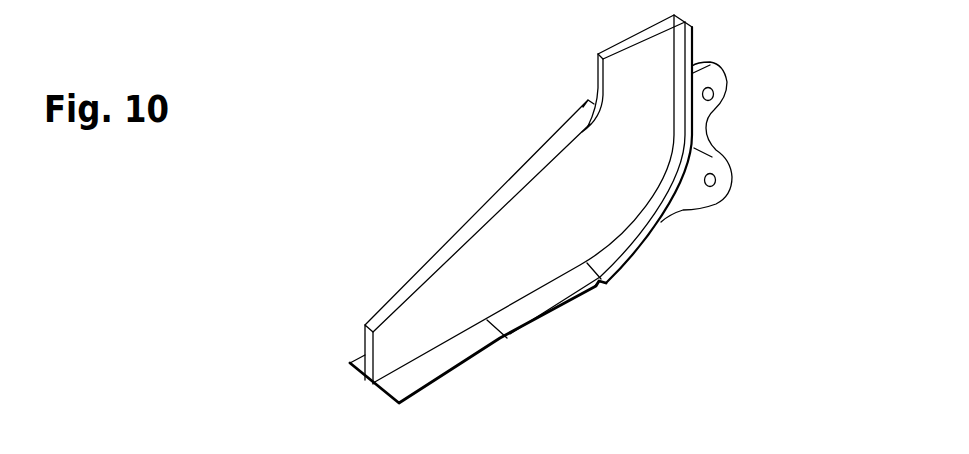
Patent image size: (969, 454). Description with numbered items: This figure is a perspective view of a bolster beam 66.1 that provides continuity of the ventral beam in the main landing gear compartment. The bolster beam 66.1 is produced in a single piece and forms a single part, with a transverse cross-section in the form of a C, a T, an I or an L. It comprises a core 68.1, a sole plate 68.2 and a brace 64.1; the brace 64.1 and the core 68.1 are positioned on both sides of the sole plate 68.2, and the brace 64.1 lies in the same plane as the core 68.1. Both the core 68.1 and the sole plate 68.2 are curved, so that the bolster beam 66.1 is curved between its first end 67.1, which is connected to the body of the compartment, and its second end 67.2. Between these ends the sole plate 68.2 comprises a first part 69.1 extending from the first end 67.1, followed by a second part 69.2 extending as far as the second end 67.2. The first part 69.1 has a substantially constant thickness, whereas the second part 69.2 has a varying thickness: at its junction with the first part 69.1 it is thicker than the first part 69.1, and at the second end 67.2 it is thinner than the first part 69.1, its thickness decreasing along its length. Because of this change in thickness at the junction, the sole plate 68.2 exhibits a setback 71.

The bolster beam 66.1 is at (445, 243).
The first end 67.1 is at (638, 58).
The second end 67.2 is at (391, 342).
The core 68.1 is at (528, 228).
The sole plate 68.2 is at (562, 290).
The first part 69.1 is at (688, 44).
The second part 69.2 is at (546, 318).
The brace 64.1 is at (705, 154).
The setback 71 is at (605, 284).